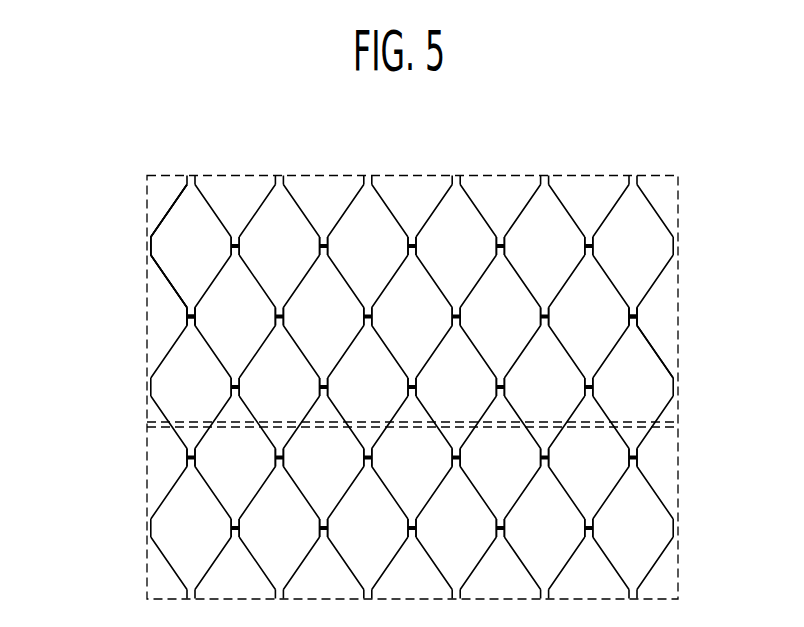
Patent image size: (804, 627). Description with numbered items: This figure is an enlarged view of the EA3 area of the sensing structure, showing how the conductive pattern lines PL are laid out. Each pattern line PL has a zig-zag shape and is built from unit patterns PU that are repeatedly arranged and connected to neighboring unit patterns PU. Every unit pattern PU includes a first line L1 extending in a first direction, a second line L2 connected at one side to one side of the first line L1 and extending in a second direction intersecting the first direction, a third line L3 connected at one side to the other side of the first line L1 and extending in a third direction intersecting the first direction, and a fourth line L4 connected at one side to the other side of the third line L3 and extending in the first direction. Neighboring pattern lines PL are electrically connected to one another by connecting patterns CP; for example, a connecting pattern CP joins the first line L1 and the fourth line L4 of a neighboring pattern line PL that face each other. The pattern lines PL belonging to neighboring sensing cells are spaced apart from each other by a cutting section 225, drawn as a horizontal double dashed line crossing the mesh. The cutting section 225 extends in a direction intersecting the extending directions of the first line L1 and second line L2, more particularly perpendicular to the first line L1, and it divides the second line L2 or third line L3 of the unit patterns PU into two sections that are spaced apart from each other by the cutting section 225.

The EA3 area EA3 is at (607, 166).
The cutting section 225 is at (695, 411).
The unit pattern PU is at (103, 190).
The first line L1 is at (151, 246).
The second line L2 is at (170, 205).
The third line L3 is at (171, 285).
The fourth line L4 is at (187, 317).
The connecting pattern CP is at (634, 312).
The pattern line PL is at (675, 340).